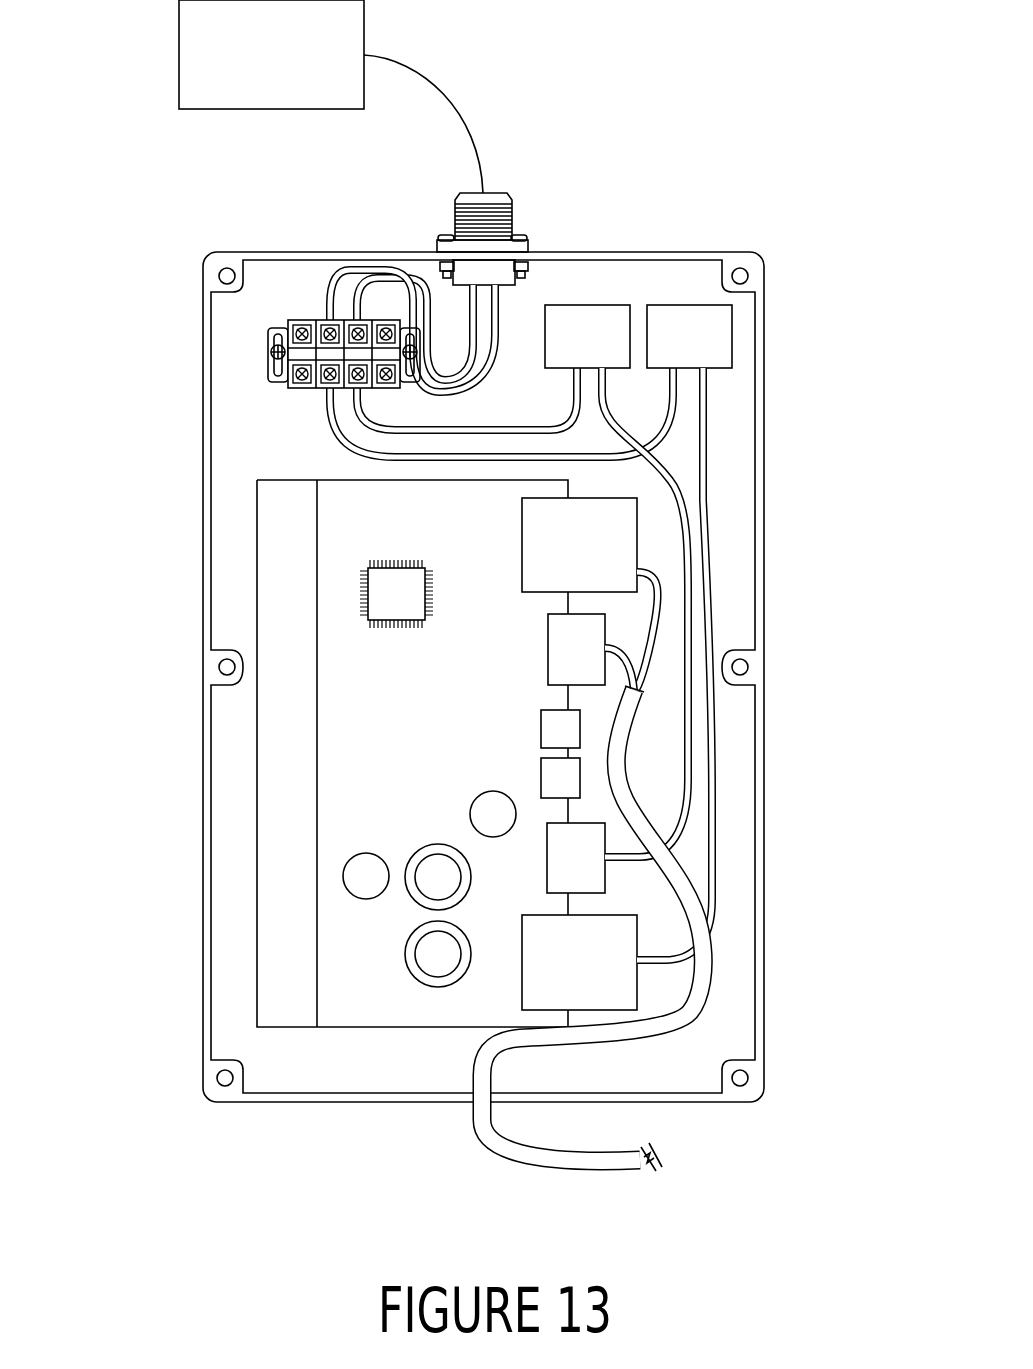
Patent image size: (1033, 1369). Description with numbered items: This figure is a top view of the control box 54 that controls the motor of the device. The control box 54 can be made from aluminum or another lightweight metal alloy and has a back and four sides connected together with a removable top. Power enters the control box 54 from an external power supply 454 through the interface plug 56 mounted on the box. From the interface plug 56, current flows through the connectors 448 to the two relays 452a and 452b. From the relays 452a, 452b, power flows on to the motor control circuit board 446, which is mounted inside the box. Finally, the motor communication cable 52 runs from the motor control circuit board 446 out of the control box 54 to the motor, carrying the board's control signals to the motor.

The power supply 454 is at (179, 58).
The interface plug 56 is at (513, 222).
The relay 452a is at (588, 305).
The relay 452b is at (690, 305).
The connectors 448 is at (308, 320).
The motor control circuit board 446 is at (348, 505).
The control box 54 is at (207, 883).
The motor communication cable 52 is at (487, 1070).